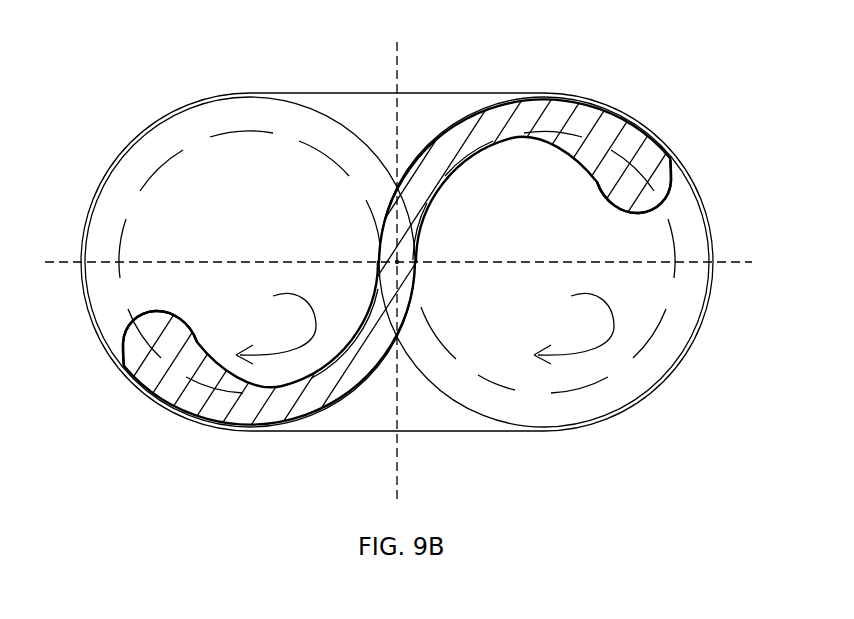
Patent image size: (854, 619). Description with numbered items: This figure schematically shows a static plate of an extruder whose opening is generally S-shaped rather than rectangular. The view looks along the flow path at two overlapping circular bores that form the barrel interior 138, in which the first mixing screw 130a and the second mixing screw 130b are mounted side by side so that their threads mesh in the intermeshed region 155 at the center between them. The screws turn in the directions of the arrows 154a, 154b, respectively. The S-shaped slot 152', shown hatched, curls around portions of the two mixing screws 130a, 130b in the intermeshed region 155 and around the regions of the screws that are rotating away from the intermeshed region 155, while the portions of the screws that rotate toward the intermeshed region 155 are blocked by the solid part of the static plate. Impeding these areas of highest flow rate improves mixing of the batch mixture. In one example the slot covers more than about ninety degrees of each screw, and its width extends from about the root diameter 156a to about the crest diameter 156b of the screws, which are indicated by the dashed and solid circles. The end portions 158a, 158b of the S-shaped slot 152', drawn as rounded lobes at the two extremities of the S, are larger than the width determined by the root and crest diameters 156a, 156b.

The first mixing screw 130a is at (182, 131).
The second mixing screw 130b is at (606, 394).
The barrel interior 138 is at (98, 287).
The S-shaped slot 152' is at (402, 265).
The arrow 154a is at (268, 327).
The arrow 154b is at (566, 327).
The intermeshed region 155 is at (398, 253).
The root diameter 156a is at (127, 229).
The crest diameter 156b is at (124, 180).
The end portion 158a is at (118, 334).
The end portion 158b is at (663, 190).